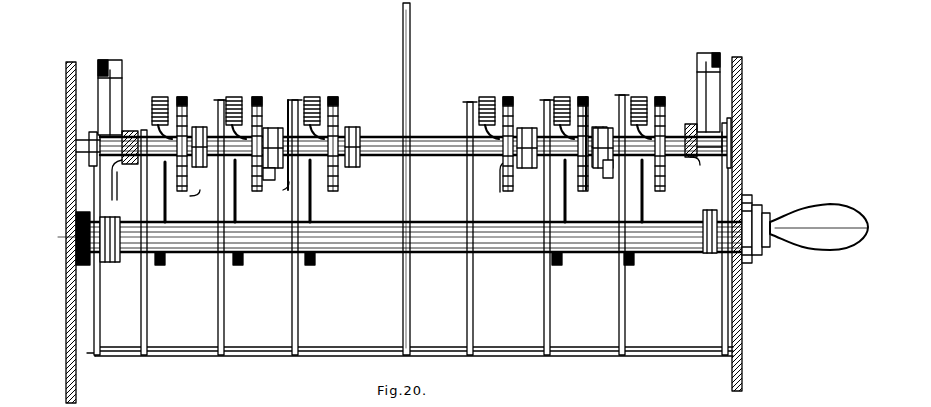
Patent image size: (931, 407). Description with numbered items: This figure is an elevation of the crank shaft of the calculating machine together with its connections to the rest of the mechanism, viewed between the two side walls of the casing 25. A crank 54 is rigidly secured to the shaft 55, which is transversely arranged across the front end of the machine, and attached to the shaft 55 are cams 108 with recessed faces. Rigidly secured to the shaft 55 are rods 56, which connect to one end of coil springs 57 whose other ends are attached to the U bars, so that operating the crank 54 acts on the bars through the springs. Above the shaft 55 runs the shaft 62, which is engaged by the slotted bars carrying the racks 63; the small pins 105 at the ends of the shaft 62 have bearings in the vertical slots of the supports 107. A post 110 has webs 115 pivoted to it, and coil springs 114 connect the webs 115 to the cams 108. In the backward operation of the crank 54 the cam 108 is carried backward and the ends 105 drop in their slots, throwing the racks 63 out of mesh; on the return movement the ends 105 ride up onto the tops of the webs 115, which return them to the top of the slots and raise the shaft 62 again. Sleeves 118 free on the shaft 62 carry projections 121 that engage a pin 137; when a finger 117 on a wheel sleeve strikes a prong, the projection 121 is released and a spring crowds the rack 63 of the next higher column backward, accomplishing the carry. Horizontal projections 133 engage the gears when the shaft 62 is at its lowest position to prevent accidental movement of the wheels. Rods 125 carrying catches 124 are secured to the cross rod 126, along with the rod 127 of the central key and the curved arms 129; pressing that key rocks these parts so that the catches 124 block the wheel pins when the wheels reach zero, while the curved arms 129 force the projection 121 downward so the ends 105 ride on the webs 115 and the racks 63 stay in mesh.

The casing 25 is at (70, 62).
The crank 54 is at (761, 194).
The shaft 55 is at (199, 256).
The rods 56 is at (165, 194).
The coil springs 57 is at (172, 94).
The shaft 62 is at (429, 139).
The racks 63 is at (258, 92).
The small pins 105 is at (96, 148).
The supports 107 is at (124, 130).
The cams 108 is at (708, 196).
The post 110 is at (98, 91).
The coil springs 114 is at (98, 62).
The webs 115 is at (114, 89).
The fingers 117 is at (288, 100).
The sleeves 118 is at (273, 128).
The projections 121 is at (264, 176).
The catches 124 is at (147, 171).
The rods 125 is at (217, 297).
The cross rod 126 is at (160, 348).
The rod 127 is at (403, 26).
The curved arms 129 is at (92, 134).
The horizontal projections 133 is at (195, 127).
The pin 137 is at (406, 195).